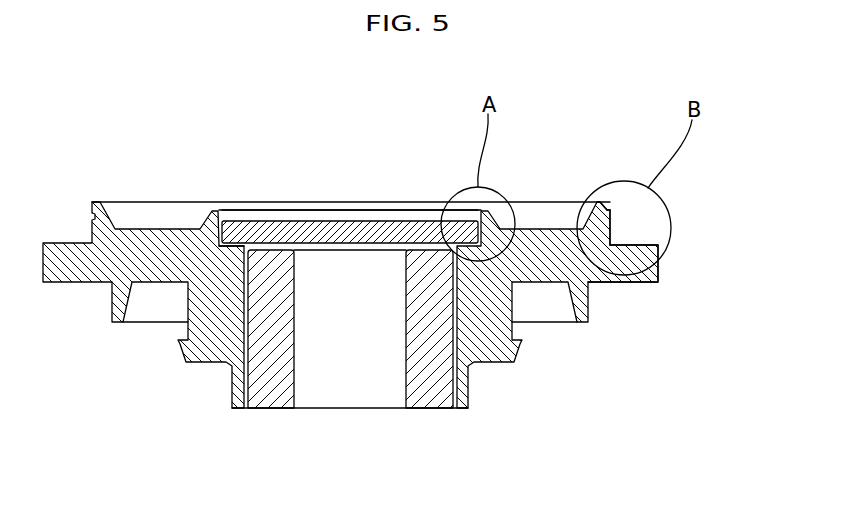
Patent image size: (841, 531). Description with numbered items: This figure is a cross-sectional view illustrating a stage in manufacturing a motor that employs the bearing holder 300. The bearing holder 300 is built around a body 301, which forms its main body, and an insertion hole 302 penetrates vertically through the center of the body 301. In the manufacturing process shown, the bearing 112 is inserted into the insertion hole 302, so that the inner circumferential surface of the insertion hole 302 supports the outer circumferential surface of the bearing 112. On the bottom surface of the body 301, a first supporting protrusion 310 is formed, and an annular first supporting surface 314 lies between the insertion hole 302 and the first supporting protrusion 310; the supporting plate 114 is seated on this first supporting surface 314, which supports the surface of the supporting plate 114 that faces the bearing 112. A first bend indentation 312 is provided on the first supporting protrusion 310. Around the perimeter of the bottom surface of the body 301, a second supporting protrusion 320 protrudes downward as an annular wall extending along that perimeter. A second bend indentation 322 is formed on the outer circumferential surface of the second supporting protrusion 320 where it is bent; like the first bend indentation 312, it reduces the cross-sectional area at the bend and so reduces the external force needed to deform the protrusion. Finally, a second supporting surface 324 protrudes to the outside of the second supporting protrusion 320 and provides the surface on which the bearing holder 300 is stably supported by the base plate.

The bearing holder 300 is at (729, 152).
The body 301 is at (106, 268).
The insertion hole 302 is at (352, 381).
The first supporting protrusion 310 is at (213, 221).
The first bend indentation 312 is at (223, 219).
The first supporting surface 314 is at (231, 247).
The second supporting protrusion 320 is at (600, 204).
The second bend indentation 322 is at (611, 215).
The second supporting surface 324 is at (633, 249).
The bearing 112 is at (433, 390).
The supporting plate 114 is at (357, 210).